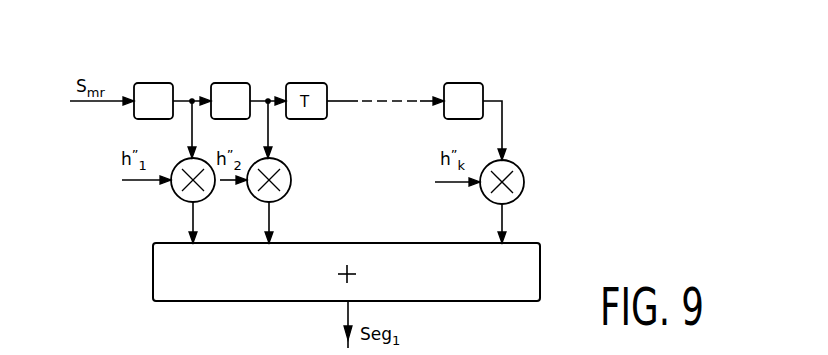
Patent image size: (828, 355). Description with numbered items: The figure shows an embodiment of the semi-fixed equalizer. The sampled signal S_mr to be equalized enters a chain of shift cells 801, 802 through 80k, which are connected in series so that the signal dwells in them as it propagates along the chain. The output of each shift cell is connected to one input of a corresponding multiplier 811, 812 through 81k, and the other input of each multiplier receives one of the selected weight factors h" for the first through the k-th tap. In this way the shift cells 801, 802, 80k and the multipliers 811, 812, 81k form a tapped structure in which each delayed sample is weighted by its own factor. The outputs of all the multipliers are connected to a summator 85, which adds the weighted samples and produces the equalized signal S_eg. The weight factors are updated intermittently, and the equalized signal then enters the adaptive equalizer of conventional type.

The shift cell 801 is at (151, 83).
The shift cell 802 is at (228, 83).
The shift cell 80k is at (466, 83).
The multiplier 811 is at (201, 200).
The multiplier 812 is at (287, 194).
The multiplier 81k is at (524, 180).
The summator 85 is at (360, 243).